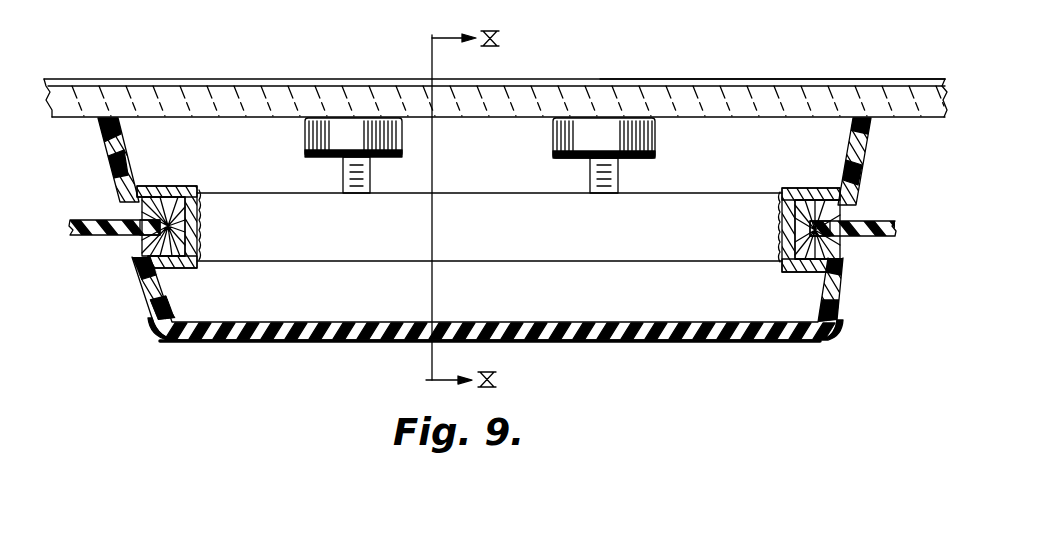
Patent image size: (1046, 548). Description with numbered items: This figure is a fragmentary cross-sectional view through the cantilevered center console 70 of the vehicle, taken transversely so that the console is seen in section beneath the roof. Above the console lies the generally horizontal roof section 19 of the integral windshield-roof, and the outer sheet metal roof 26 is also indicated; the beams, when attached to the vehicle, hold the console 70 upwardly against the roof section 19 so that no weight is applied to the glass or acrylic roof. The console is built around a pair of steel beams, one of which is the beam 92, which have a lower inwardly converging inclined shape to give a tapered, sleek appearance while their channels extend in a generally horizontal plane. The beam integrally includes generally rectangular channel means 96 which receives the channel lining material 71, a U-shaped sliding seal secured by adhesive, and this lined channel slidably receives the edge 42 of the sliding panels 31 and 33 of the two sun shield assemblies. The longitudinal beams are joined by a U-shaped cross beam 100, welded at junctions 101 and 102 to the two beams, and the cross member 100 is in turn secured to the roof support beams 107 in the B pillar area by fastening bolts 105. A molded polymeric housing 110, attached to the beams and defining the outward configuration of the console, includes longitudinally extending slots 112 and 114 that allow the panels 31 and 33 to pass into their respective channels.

The roof section 19 is at (600, 97).
The sheet metal rear roof 26 is at (873, 52).
The panel member 31 is at (893, 240).
The panel member 33 is at (93, 235).
The panel edge 42 is at (135, 236).
The console 70 is at (830, 342).
The channel lining material 71 is at (175, 270).
The steel beam 92 is at (145, 151).
The channel means 96 is at (163, 187).
The cross beam 100 is at (510, 163).
The junction 101 is at (200, 223).
The junction 102 is at (780, 227).
The bolt 105 is at (352, 175).
The roof support beam 107 is at (305, 130).
The molded polymeric housing 110 is at (698, 345).
The slot 112 is at (838, 205).
The slot 114 is at (117, 193).